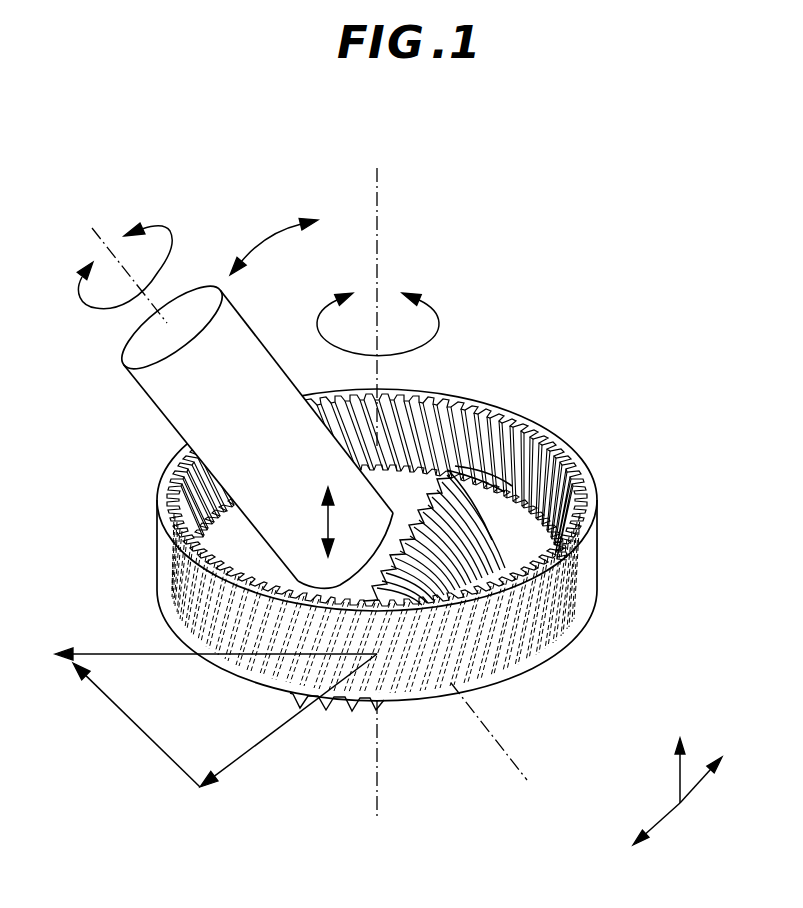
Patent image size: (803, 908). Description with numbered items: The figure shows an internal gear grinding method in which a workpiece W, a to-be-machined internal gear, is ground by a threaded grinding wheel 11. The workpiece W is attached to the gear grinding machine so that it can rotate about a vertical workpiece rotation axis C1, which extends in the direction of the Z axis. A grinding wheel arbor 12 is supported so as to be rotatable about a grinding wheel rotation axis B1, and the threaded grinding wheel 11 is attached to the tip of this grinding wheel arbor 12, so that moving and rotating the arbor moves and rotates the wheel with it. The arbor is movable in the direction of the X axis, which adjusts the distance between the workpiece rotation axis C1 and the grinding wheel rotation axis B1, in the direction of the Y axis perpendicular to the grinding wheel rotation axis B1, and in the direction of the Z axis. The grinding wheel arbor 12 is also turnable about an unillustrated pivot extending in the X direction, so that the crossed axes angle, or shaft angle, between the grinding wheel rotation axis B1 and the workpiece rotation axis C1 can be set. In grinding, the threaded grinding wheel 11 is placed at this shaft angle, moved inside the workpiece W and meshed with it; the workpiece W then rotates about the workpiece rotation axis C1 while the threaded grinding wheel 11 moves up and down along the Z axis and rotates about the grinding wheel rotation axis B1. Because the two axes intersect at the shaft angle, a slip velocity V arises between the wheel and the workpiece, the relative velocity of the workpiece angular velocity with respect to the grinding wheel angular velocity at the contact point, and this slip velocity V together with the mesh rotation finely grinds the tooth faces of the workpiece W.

The workpiece W is at (597, 548).
The threaded grinding wheel 11 is at (482, 527).
The grinding wheel arbor 12 is at (167, 408).
The grinding wheel rotation axis B1 is at (292, 489).
The workpiece rotation axis C1 is at (378, 475).
The slip velocity V is at (136, 725).
The X axis X is at (711, 768).
The Y axis Y is at (644, 838).
The Z axis Z is at (682, 754).